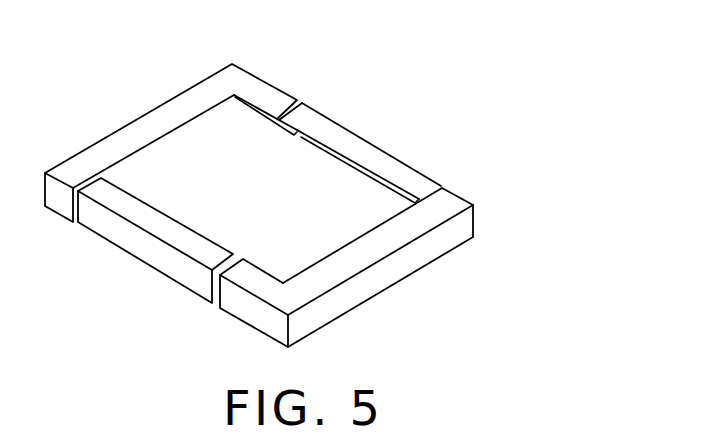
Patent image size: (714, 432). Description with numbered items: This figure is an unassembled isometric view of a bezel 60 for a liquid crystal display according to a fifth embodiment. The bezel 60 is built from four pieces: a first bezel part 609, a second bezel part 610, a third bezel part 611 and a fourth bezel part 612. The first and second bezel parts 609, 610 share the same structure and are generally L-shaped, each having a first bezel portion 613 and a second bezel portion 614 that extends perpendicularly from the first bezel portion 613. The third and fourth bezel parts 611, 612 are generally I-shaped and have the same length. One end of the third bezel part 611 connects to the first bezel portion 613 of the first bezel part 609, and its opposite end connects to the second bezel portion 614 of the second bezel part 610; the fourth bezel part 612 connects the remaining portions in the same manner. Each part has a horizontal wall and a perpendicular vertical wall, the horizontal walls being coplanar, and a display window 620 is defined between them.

The bezel 60 is at (212, 45).
The first bezel part 609 is at (467, 313).
The second bezel part 610 is at (137, 137).
The third bezel part 611 is at (313, 123).
The fourth bezel part 612 is at (167, 260).
The first bezel portion 613 is at (327, 273).
The second bezel portion 614 is at (263, 285).
The display window 620 is at (317, 188).